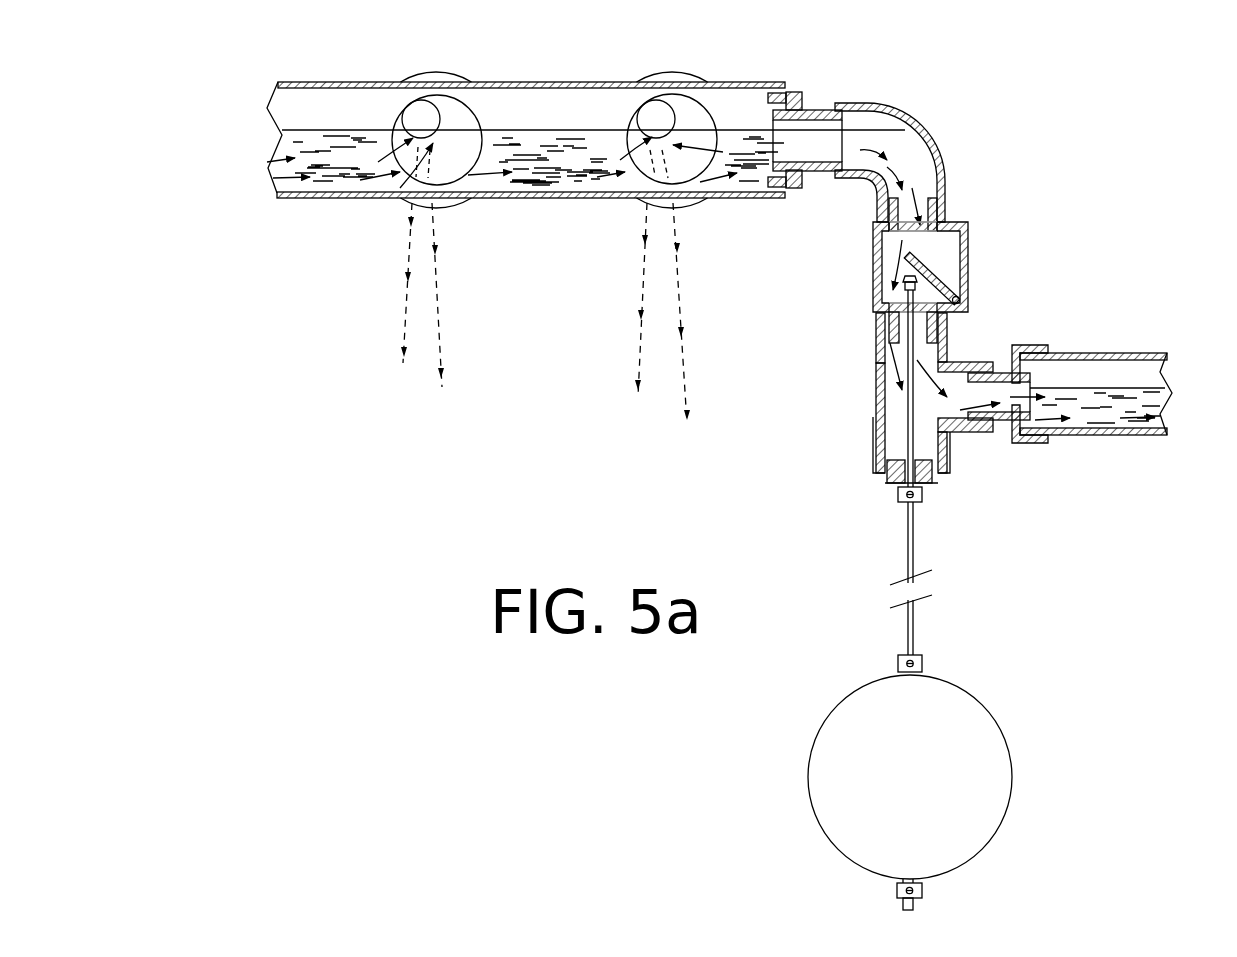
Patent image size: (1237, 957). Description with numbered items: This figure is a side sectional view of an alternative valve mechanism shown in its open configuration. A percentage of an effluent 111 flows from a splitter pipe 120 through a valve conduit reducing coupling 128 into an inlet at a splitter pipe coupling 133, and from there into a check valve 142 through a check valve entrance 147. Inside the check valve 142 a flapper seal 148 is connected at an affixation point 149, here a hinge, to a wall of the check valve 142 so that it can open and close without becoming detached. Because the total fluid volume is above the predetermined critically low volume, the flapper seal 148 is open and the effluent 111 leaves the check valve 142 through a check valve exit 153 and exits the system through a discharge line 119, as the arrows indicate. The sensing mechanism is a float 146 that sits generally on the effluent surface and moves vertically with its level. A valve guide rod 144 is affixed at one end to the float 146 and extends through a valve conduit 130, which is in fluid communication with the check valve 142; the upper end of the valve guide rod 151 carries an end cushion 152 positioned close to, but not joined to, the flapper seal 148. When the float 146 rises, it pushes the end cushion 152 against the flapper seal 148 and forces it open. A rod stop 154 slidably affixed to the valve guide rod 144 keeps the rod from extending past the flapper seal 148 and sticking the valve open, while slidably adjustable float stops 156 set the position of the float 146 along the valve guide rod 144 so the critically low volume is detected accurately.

The splitter pipe 120 is at (288, 82).
The effluent 111 is at (750, 193).
The valve conduit reducing coupling 128 is at (800, 92).
The splitter pipe coupling 133 is at (868, 103).
The check valve entrance 147 is at (933, 195).
The check valve 142 is at (1000, 272).
The flapper seal 148 is at (925, 252).
The affixation point 149 is at (961, 300).
The end cushion 152 is at (903, 275).
The upper end of the valve guide rod 151 is at (942, 320).
The check valve exit 153 is at (878, 323).
The valve conduit 130 is at (872, 368).
The discharge line 119 is at (1117, 376).
The valve guide rod 144 is at (913, 535).
The rod stop 154 is at (922, 495).
The float stops 156 is at (922, 665).
The float 146 is at (990, 789).